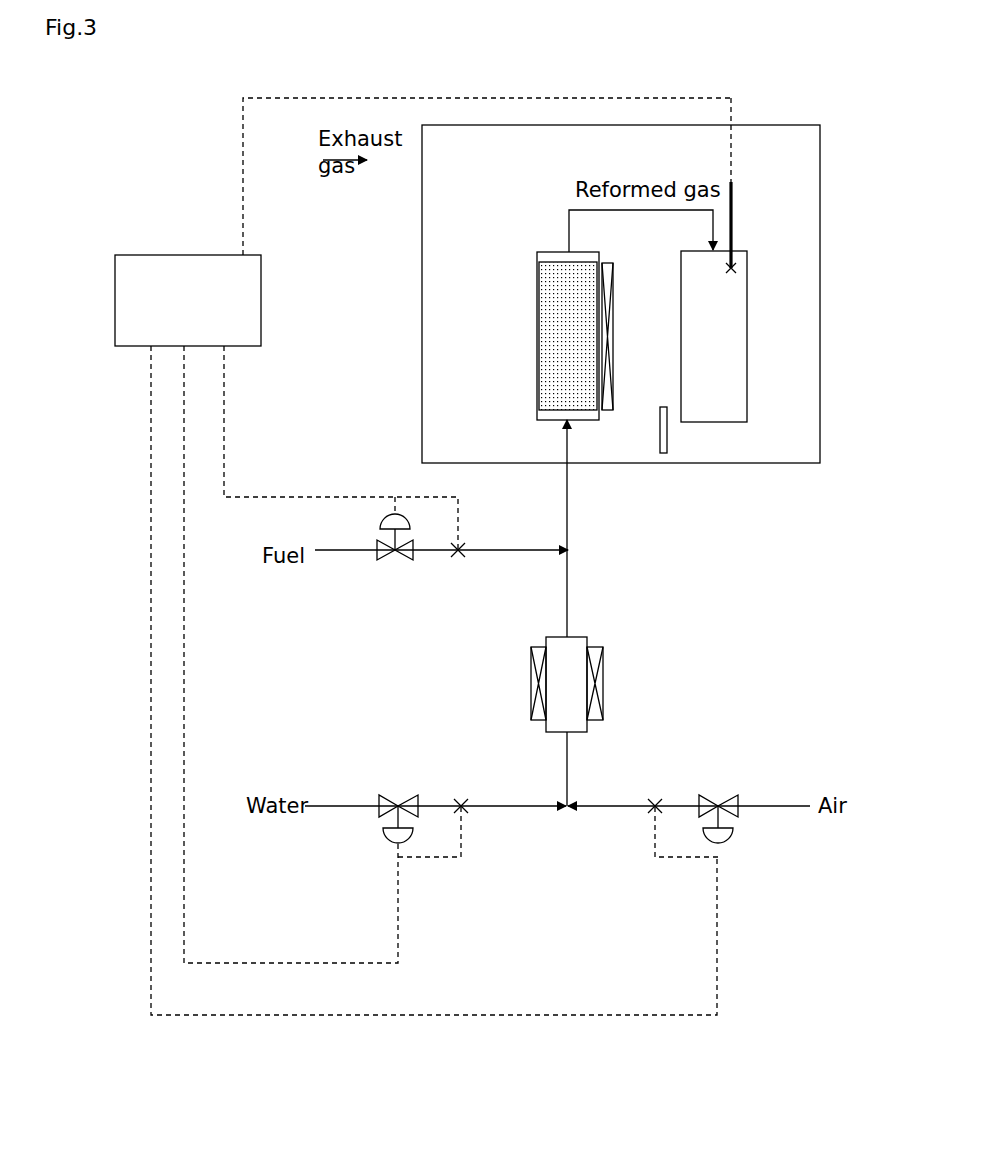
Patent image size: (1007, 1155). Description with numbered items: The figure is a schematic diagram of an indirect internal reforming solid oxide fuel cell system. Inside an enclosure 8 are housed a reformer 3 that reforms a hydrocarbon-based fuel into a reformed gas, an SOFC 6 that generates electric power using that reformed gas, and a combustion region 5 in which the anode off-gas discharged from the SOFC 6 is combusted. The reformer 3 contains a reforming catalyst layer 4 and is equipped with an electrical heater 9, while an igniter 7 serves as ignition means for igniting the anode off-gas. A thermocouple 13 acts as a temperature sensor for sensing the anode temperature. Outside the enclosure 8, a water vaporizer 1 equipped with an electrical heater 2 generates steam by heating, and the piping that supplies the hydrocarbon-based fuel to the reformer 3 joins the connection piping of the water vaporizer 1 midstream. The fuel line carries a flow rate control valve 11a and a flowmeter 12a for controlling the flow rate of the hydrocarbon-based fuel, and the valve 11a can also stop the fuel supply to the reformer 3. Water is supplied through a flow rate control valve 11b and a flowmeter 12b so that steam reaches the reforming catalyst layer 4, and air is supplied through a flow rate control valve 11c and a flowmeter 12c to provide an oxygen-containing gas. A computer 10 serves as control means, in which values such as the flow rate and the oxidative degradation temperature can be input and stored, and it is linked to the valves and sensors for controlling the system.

The water vaporizer 1 is at (589, 634).
The electrical heater 2 is at (605, 690).
The reformer 3 is at (534, 253).
The reforming catalyst layer 4 is at (556, 357).
The combustion region 5 is at (667, 347).
The SOFC 6 is at (755, 268).
The igniter 7 is at (670, 447).
The enclosure 8 is at (792, 463).
The electrical heater 9 is at (618, 270).
The computer 10 is at (192, 245).
The flow rate control valve 11a is at (392, 563).
The flow rate control valve 11b is at (395, 793).
The flow rate control valve 11c is at (720, 793).
The flowmeter 12a is at (457, 563).
The flowmeter 12b is at (458, 793).
The flowmeter 12c is at (658, 793).
The thermocouple 13 is at (738, 200).